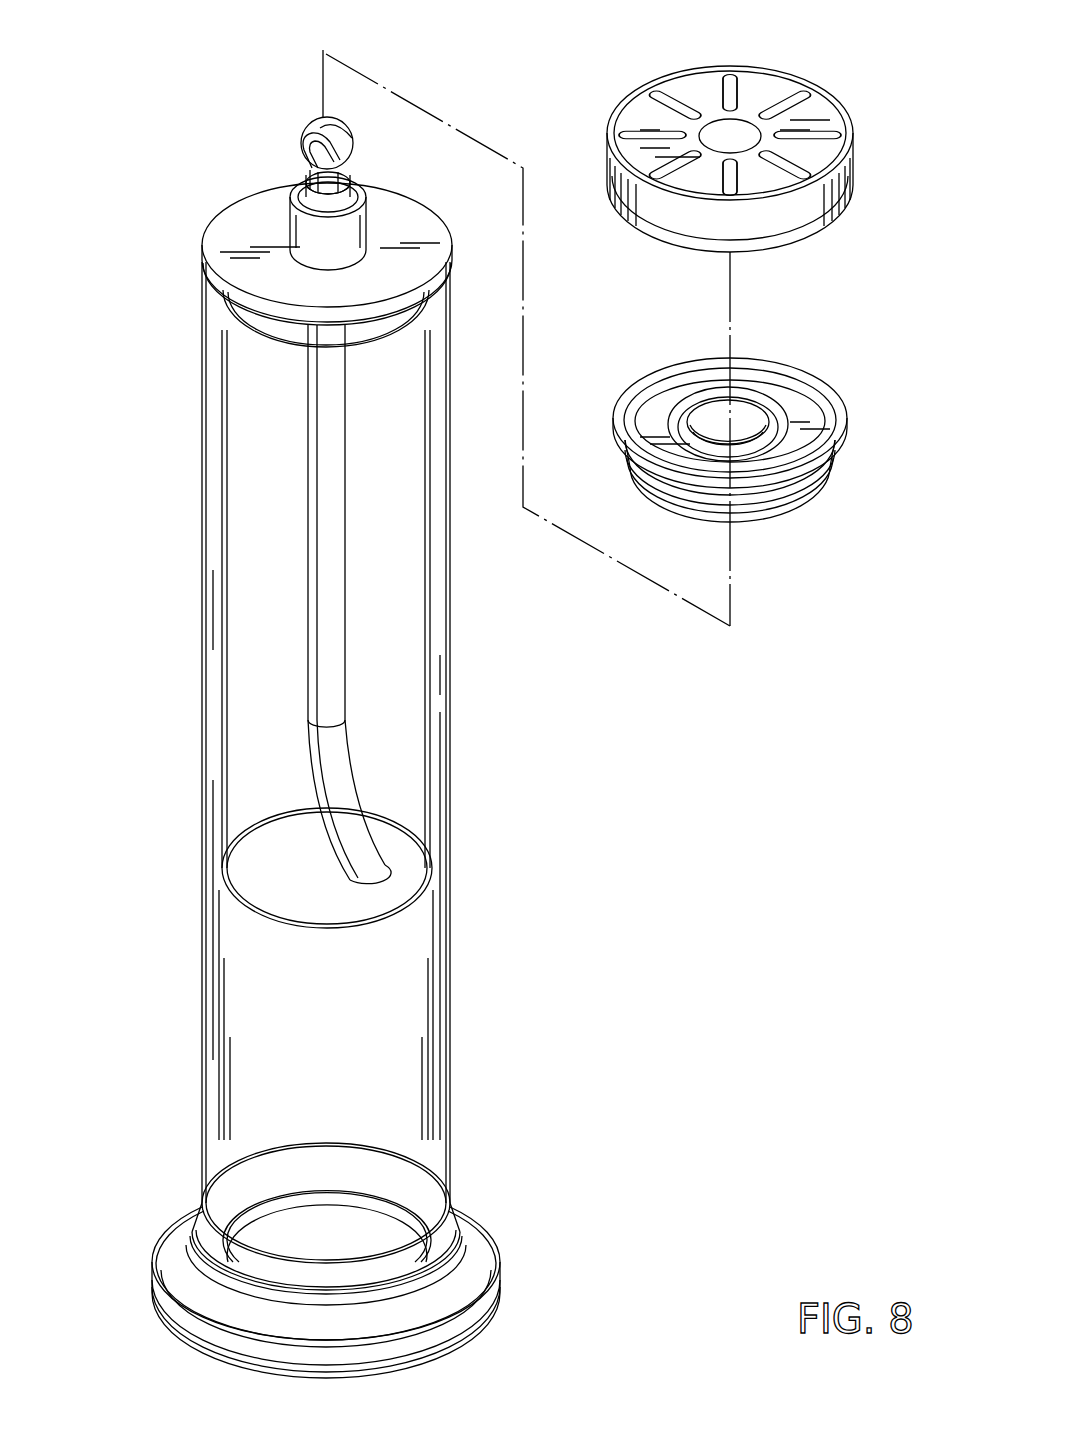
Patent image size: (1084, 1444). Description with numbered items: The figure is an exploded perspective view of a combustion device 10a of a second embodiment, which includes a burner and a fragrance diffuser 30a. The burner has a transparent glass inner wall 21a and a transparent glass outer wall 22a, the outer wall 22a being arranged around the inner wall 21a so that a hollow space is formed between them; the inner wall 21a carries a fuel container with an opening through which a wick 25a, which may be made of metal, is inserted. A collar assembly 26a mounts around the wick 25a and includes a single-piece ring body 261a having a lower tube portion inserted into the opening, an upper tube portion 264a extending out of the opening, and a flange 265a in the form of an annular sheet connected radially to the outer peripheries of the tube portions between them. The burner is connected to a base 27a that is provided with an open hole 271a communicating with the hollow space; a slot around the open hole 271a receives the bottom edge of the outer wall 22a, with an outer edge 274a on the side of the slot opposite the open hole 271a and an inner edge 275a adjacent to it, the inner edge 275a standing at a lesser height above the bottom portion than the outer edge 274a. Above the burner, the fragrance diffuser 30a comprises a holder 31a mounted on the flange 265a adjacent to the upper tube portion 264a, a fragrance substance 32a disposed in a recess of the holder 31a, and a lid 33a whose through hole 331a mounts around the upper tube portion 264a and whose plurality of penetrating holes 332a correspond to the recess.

The combustion device 10a is at (165, 135).
The inner wall 21a is at (445, 702).
The outer wall 22a is at (467, 863).
The wick 25a is at (318, 127).
The collar assembly 26a is at (240, 178).
The ring body 261a is at (198, 205).
The upper tube portion 264a is at (352, 240).
The flange 265a is at (240, 233).
The base 27a is at (522, 1258).
The open hole 271a is at (400, 1228).
The outer edge 274a is at (470, 1218).
The inner edge 275a is at (380, 1200).
The fragrance diffuser 30a is at (862, 92).
The holder 31a is at (783, 495).
The fragrance substance 32a is at (805, 415).
The lid 33a is at (815, 215).
The through hole 331a is at (742, 118).
The penetrating holes 332a is at (725, 88).